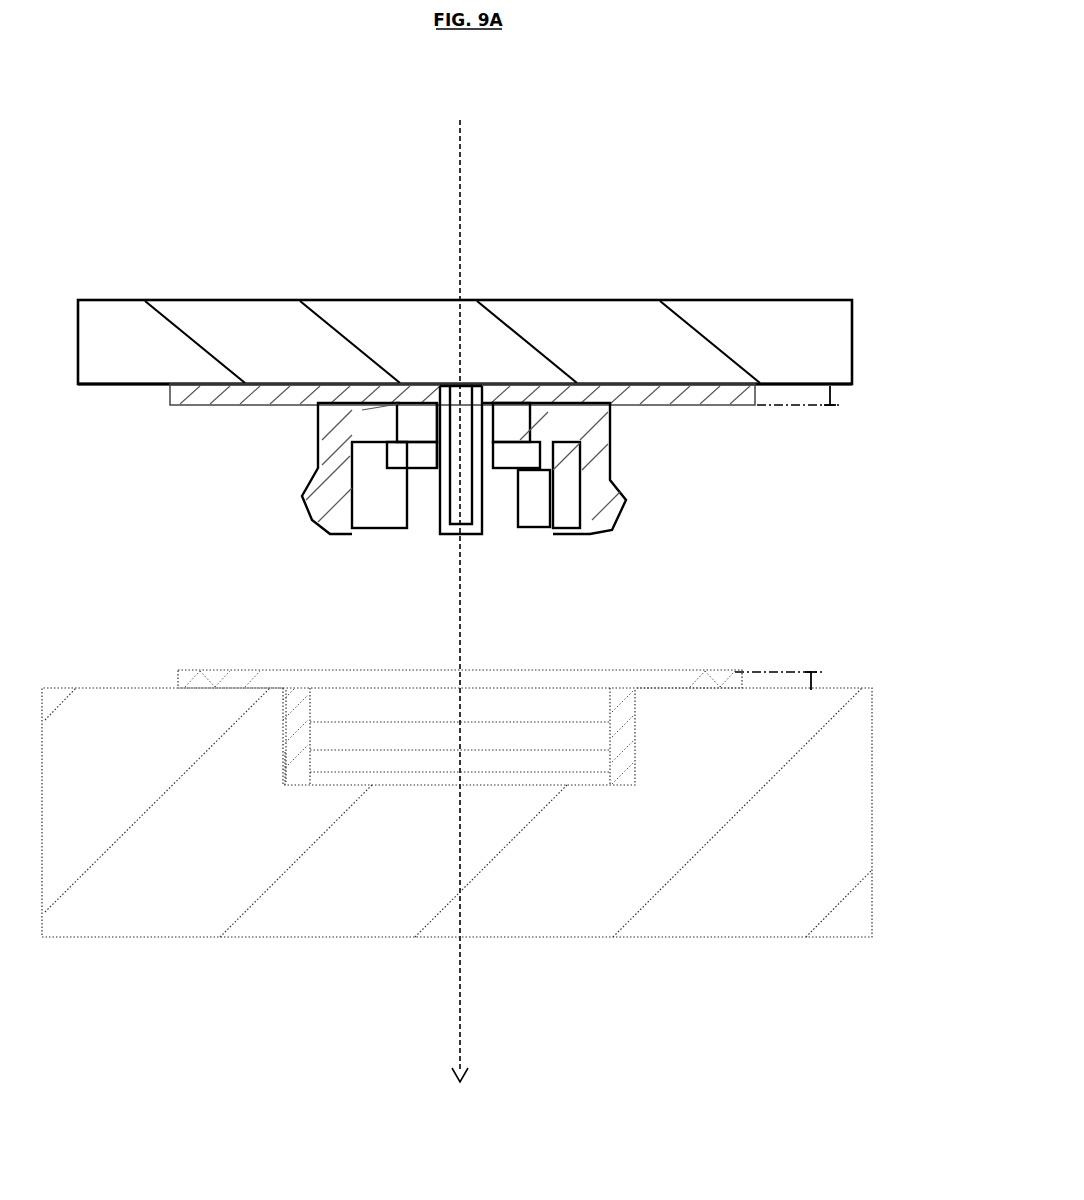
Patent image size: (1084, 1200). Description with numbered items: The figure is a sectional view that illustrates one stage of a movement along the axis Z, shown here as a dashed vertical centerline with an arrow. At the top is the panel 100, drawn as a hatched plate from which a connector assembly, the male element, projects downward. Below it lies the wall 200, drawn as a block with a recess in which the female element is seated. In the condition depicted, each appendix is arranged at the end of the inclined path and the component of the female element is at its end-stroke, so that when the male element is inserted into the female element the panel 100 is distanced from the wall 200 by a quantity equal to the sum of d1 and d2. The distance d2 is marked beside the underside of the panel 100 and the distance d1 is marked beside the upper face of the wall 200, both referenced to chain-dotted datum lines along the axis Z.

The panel 100 is at (440, 357).
The wall 200 is at (761, 865).
The distance d1 is at (838, 678).
The distance d2 is at (846, 396).
The axis Z is at (472, 601).